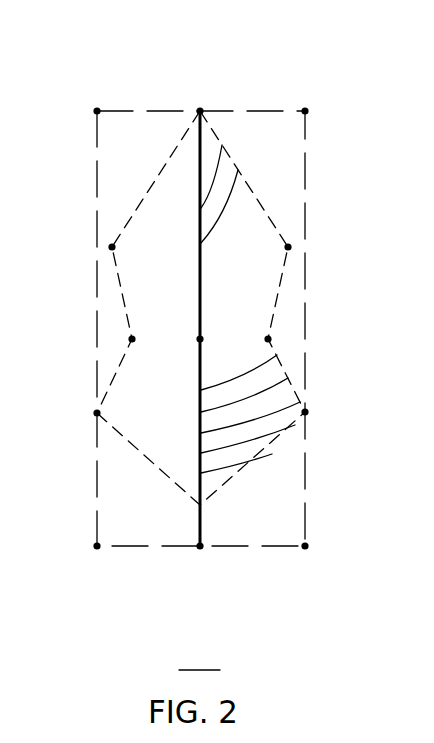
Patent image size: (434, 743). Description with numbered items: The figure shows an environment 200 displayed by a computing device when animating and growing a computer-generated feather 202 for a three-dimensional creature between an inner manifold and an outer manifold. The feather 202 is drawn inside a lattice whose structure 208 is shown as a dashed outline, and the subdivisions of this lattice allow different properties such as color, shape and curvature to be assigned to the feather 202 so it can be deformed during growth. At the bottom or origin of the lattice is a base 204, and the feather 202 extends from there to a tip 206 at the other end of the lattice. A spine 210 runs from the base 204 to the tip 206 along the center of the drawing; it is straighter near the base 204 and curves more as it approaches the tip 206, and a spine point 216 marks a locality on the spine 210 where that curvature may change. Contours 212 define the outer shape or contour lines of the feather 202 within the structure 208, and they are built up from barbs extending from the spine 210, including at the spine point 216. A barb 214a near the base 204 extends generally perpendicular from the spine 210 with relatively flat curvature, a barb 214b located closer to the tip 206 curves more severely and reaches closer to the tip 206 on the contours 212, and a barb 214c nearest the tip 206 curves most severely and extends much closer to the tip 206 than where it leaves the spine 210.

The environment 200 is at (139, 70).
The feather 202 is at (148, 552).
The base 204 is at (206, 556).
The tip 206 is at (202, 107).
The structure 208 is at (97, 328).
The spine 210 is at (200, 505).
The contours 212 is at (279, 282).
The barb 214a is at (268, 430).
The barb 214b is at (276, 356).
The barb 214c is at (232, 206).
The spine point 216 is at (198, 344).